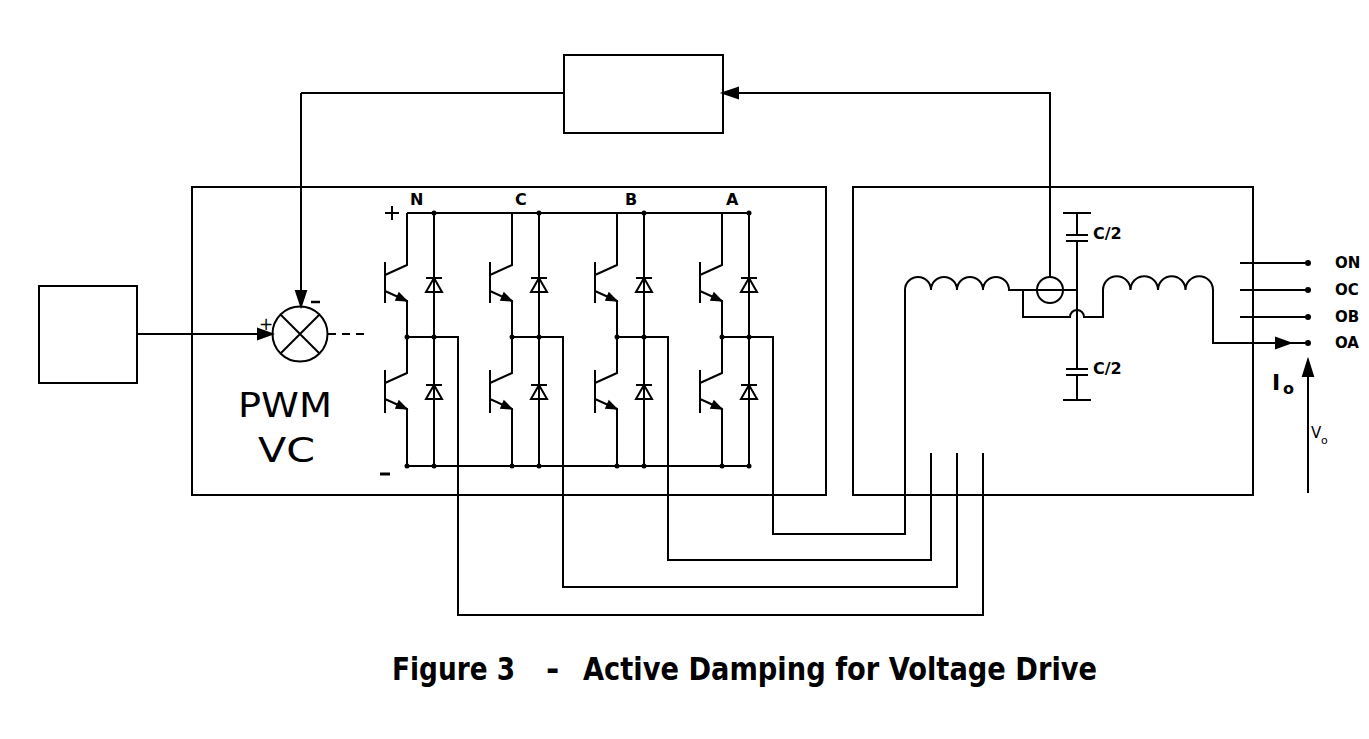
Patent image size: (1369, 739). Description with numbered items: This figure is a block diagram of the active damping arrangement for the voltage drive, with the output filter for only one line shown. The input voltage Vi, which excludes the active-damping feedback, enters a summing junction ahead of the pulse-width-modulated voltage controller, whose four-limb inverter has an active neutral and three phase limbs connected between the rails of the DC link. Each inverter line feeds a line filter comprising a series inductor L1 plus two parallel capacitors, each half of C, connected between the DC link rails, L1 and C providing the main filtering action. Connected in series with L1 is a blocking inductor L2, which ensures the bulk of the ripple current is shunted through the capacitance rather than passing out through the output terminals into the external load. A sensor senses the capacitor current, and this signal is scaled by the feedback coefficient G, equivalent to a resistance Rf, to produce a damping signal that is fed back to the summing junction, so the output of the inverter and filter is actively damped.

The input voltage Vi is at (88, 334).
The feedback coefficient G is at (643, 94).
The series inductor L1 is at (971, 258).
The blocking inductor L2 is at (1165, 284).